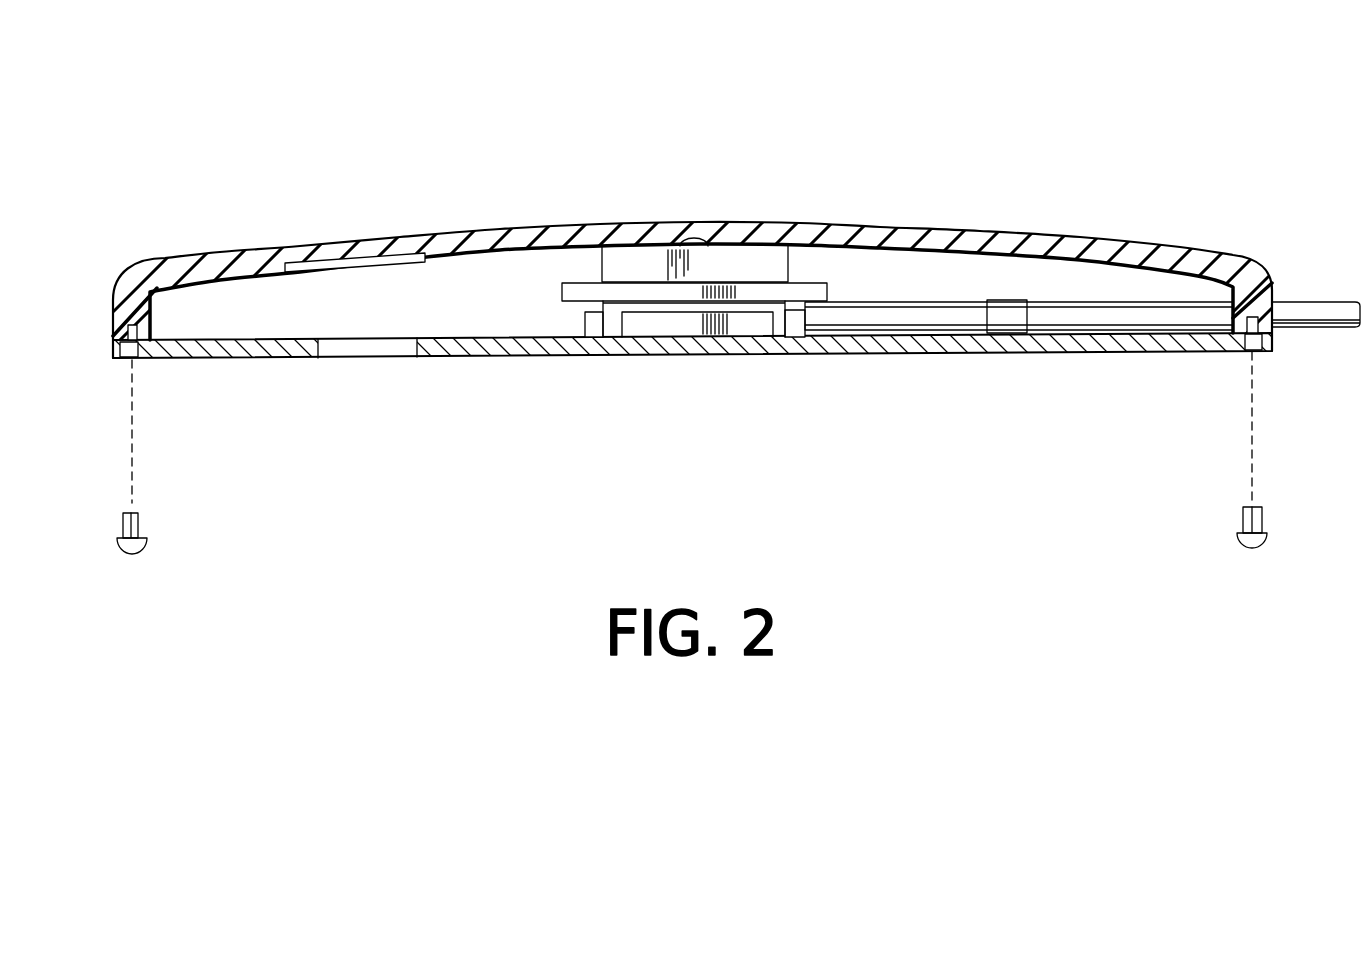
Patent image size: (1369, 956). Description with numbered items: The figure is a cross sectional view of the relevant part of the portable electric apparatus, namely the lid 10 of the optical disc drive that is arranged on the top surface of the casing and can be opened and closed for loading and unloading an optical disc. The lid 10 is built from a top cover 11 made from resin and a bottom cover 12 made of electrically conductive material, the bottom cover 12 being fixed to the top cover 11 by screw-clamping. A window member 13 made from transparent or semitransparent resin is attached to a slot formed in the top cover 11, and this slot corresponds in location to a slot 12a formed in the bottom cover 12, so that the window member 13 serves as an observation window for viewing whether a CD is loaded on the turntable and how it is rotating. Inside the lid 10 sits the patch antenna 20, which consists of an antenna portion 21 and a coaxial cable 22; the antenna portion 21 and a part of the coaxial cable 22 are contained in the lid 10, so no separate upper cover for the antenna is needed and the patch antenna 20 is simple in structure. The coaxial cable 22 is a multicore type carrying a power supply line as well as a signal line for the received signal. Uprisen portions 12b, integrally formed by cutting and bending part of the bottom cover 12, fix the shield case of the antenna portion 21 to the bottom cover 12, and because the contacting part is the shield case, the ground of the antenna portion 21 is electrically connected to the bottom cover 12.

The lid 10 is at (305, 141).
The top cover 11 is at (207, 258).
The bottom cover 12 is at (687, 294).
The slot 12a is at (363, 358).
The uprisen portion 12b is at (593, 322).
The window member 13 is at (343, 247).
The patch antenna 20 is at (952, 130).
The antenna portion 21 is at (747, 257).
The coaxial cable 22 is at (883, 317).